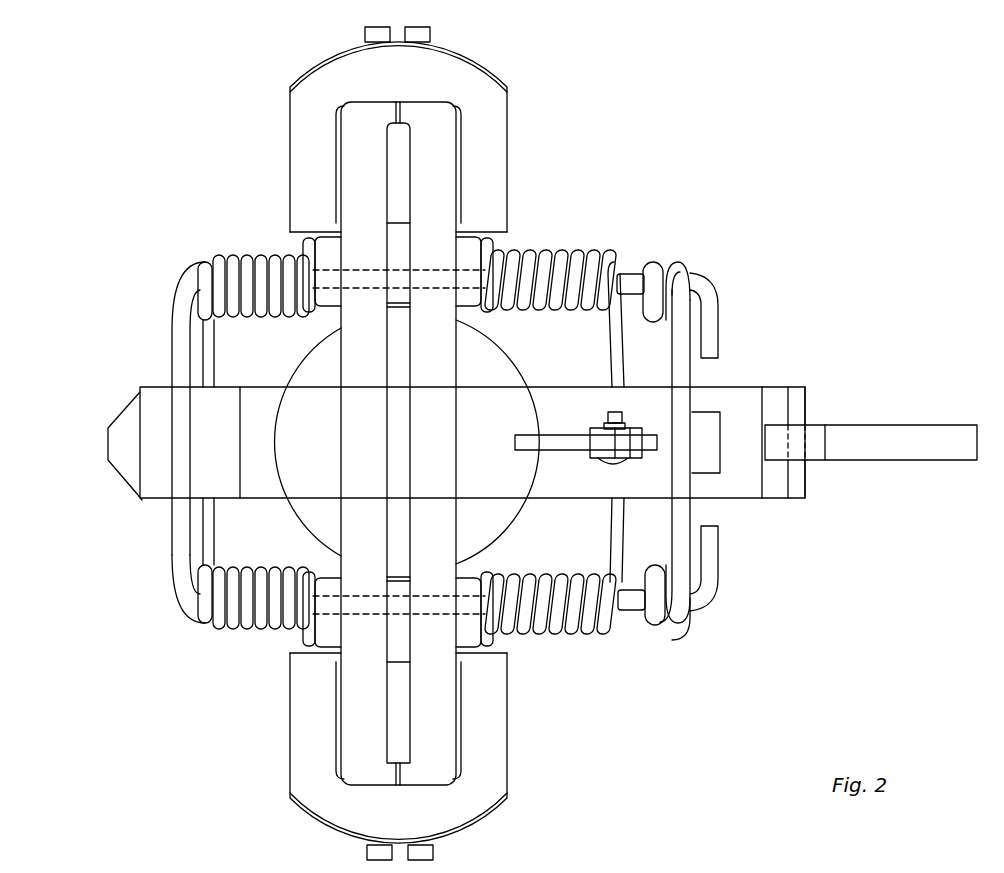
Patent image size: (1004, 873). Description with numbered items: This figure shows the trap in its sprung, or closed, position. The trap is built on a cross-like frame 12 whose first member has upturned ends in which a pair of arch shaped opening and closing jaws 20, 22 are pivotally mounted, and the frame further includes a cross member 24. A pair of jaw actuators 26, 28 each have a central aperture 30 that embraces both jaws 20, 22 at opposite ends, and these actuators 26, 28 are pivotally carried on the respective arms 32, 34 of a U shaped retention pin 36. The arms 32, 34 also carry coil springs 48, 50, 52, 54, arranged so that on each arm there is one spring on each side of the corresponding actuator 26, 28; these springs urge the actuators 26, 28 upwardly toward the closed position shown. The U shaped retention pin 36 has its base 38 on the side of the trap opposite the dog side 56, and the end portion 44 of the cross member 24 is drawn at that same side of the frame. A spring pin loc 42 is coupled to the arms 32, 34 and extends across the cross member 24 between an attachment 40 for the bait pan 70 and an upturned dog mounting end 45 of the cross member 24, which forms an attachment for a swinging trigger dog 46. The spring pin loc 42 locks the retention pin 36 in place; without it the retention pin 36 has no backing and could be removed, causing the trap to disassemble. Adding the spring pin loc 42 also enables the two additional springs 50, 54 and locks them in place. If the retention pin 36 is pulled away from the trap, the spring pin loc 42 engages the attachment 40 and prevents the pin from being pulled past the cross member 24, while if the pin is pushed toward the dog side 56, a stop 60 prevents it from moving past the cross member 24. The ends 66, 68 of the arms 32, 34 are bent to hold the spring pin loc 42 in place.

The cross-like frame 12 is at (568, 503).
The jaw 20 is at (360, 636).
The jaw 22 is at (432, 646).
The cross member 24 is at (150, 498).
The jaw actuator 26 is at (507, 152).
The jaw actuator 28 is at (508, 778).
The central aperture 30 is at (395, 155).
The arm 32 is at (625, 275).
The arm 34 is at (623, 610).
The U shaped retention pin 36 is at (176, 291).
The base 38 is at (168, 366).
The attachment 40 is at (628, 466).
The spring pin loc 42 is at (689, 267).
The conical tip 44 is at (150, 386).
The upturned dog mounting end 45 is at (785, 387).
The swinging trigger dog 46 is at (912, 423).
The coil spring 48 is at (250, 253).
The coil spring 50 is at (554, 260).
The coil spring 52 is at (238, 628).
The coil spring 54 is at (578, 629).
The dog side 56 is at (930, 530).
The stop 60 is at (714, 421).
The end 66 is at (712, 322).
The end 68 is at (708, 597).
The bait pan 70 is at (504, 419).